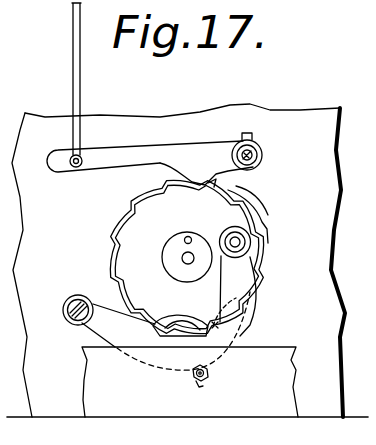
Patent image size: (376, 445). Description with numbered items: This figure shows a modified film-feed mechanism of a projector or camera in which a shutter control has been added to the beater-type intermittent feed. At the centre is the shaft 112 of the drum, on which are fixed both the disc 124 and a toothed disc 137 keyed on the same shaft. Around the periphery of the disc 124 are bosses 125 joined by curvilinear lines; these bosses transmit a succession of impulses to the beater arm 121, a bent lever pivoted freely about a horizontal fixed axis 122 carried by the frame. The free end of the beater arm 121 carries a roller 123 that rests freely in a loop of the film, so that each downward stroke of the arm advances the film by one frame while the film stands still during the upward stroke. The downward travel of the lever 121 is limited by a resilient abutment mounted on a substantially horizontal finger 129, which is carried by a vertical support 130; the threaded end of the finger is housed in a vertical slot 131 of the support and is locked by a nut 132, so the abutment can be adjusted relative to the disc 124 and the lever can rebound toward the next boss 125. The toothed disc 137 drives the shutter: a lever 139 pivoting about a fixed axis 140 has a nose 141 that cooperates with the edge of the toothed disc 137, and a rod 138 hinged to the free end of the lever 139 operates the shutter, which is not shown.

The shaft 112 is at (182, 258).
The beater arm 121 is at (240, 327).
The horizontal fixed axis 122 is at (75, 320).
The roller 123 is at (250, 242).
The disc 124 is at (221, 215).
The boss 125 is at (228, 187).
The horizontal finger 129 is at (192, 373).
The vertical support 130 is at (275, 353).
The vertical slot 131 is at (214, 391).
The nut 132 is at (208, 375).
The toothed disc 137 is at (117, 237).
The rod 138 is at (93, 87).
The lever 139 is at (141, 155).
The fixed axis 140 is at (288, 133).
The nose 141 is at (205, 183).